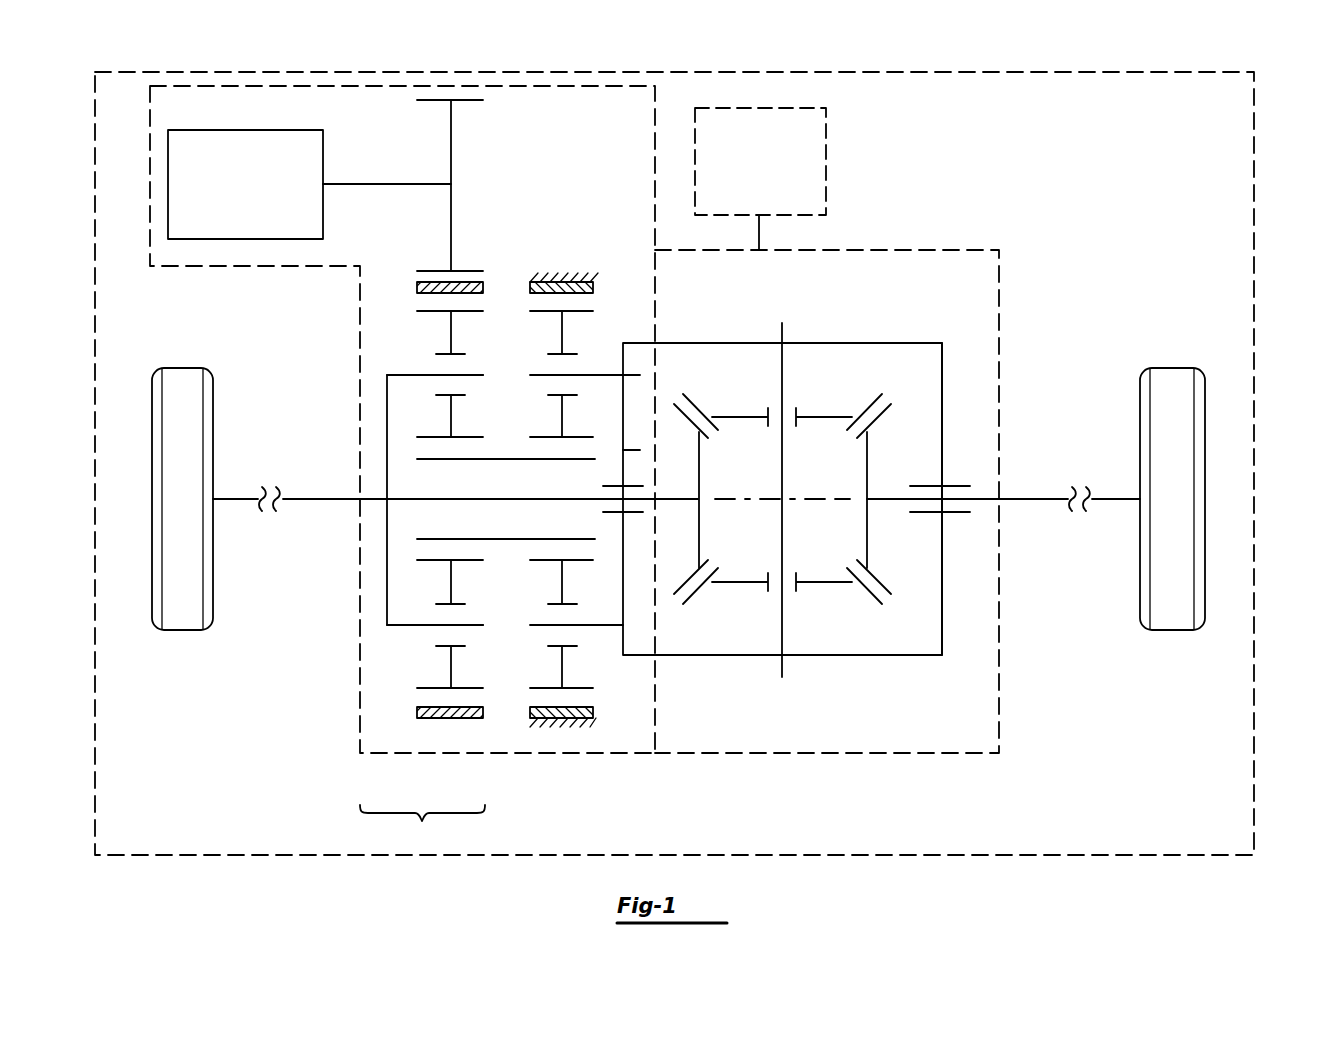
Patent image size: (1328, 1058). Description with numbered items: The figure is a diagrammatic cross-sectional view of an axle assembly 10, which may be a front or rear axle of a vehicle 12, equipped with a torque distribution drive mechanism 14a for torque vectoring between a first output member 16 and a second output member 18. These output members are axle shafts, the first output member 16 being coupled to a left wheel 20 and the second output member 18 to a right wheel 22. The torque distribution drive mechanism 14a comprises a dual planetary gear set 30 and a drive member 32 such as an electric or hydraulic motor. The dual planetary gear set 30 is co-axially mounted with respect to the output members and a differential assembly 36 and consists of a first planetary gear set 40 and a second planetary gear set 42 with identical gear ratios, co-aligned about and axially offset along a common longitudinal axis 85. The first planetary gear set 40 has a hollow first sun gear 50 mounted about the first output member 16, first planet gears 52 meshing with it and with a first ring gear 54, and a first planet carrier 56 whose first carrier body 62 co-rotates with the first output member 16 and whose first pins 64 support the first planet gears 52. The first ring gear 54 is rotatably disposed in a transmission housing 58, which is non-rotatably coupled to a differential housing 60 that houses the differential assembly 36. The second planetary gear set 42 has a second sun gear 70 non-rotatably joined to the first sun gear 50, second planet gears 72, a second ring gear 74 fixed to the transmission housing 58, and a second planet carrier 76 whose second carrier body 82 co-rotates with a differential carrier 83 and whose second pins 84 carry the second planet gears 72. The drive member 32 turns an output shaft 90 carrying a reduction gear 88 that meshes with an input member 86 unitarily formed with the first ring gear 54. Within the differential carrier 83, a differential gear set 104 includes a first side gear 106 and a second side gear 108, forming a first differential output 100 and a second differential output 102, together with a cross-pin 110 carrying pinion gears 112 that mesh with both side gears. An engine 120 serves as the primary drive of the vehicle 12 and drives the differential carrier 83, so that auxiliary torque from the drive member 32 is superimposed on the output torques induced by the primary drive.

The axle assembly 10 is at (1093, 390).
The vehicle 12 is at (1254, 100).
The torque distribution drive mechanism 14a is at (352, 668).
The first output member 16 is at (320, 500).
The second output member 18 is at (1033, 500).
The left wheel 20 is at (182, 630).
The right wheel 22 is at (1173, 630).
The dual planetary gear set 30 is at (422, 828).
The drive member 32 is at (232, 240).
The differential assembly 36 is at (950, 325).
The first planetary gear set 40 is at (447, 667).
The second planetary gear set 42 is at (560, 667).
The first sun gear 50 is at (453, 459).
The first planet gears 52 is at (451, 418).
The first ring gear 54 is at (440, 297).
The first planet carrier 56 is at (387, 413).
The transmission housing 58 is at (358, 618).
The differential housing 60 is at (960, 250).
The first carrier body 62 is at (387, 522).
The first pins 64 is at (400, 373).
The second sun gear 70 is at (570, 462).
The second planet gears 72 is at (562, 420).
The second ring gear 74 is at (580, 299).
The second planet carrier 76 is at (623, 389).
The second carrier body 82 is at (623, 450).
The differential carrier 83 is at (942, 403).
The second pins 84 is at (542, 373).
The common longitudinal axis 85 is at (822, 497).
The input member 86 is at (483, 286).
The reduction gear 88 is at (462, 100).
The output shaft 90 is at (395, 184).
The first differential output 100 is at (697, 527).
The second differential output 102 is at (867, 535).
The differential gear set 104 is at (840, 378).
The first side gear 106 is at (700, 514).
The second side gear 108 is at (865, 515).
The cross-pin 110 is at (782, 323).
The pinion gears 112 is at (822, 415).
The engine 120 is at (826, 158).